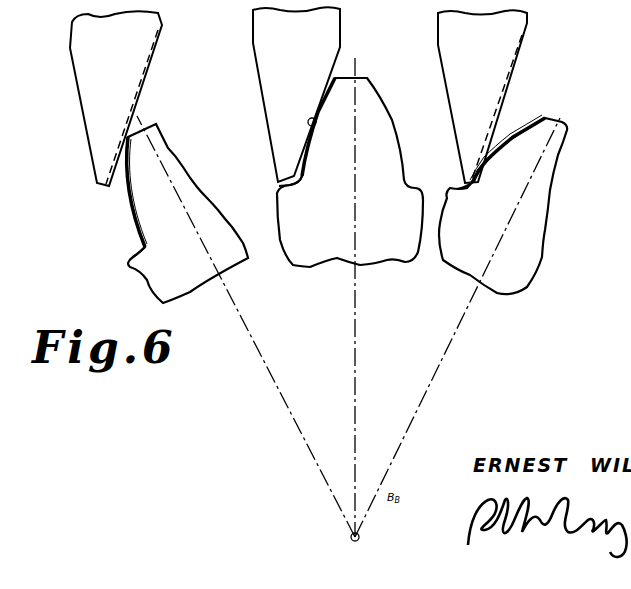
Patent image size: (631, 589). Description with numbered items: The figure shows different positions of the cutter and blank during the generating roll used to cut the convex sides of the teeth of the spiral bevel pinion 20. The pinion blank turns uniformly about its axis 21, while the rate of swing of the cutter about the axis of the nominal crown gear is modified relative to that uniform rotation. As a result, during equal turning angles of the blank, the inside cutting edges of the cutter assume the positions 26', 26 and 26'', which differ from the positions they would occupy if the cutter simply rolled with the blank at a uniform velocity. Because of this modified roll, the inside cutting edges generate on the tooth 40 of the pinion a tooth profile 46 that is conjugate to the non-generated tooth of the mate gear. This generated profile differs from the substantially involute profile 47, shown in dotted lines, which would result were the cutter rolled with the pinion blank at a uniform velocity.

The spiral bevel pinion 20 is at (337, 253).
The axis of the pinion 21 is at (350, 540).
The inside cutting edges 26 is at (313, 94).
The position of inside cutting edges 26' is at (500, 96).
The position of inside cutting edges 26'' is at (135, 98).
The tooth of the pinion 40 is at (385, 115).
The tooth profile 46 is at (138, 220).
The involute profile 47 is at (140, 238).